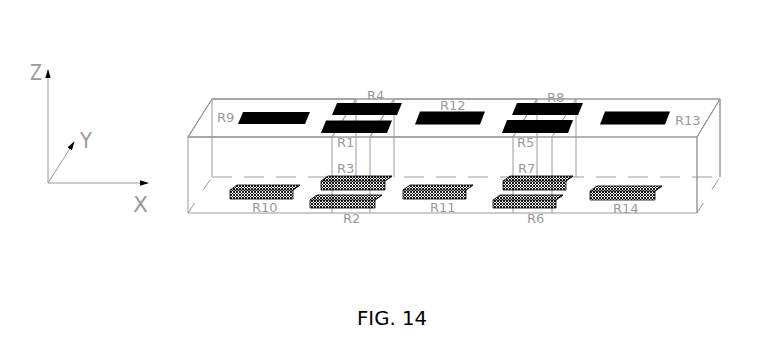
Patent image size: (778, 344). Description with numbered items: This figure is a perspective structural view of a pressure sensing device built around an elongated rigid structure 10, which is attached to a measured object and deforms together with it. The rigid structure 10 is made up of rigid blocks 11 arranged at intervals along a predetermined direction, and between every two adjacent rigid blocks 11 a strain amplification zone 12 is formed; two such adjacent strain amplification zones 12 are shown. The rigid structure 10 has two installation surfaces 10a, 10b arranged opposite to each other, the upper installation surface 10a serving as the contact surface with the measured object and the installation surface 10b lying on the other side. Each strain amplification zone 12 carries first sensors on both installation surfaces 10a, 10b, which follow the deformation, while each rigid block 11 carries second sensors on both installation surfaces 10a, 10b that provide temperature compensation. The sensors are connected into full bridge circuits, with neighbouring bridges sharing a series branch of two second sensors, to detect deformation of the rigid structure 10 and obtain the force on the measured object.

The rigid structure 10 is at (233, 100).
The installation surface 10a is at (662, 103).
The installation surface 10b is at (702, 188).
The rigid block 11 is at (293, 107).
The strain amplification zone 12 is at (359, 100).